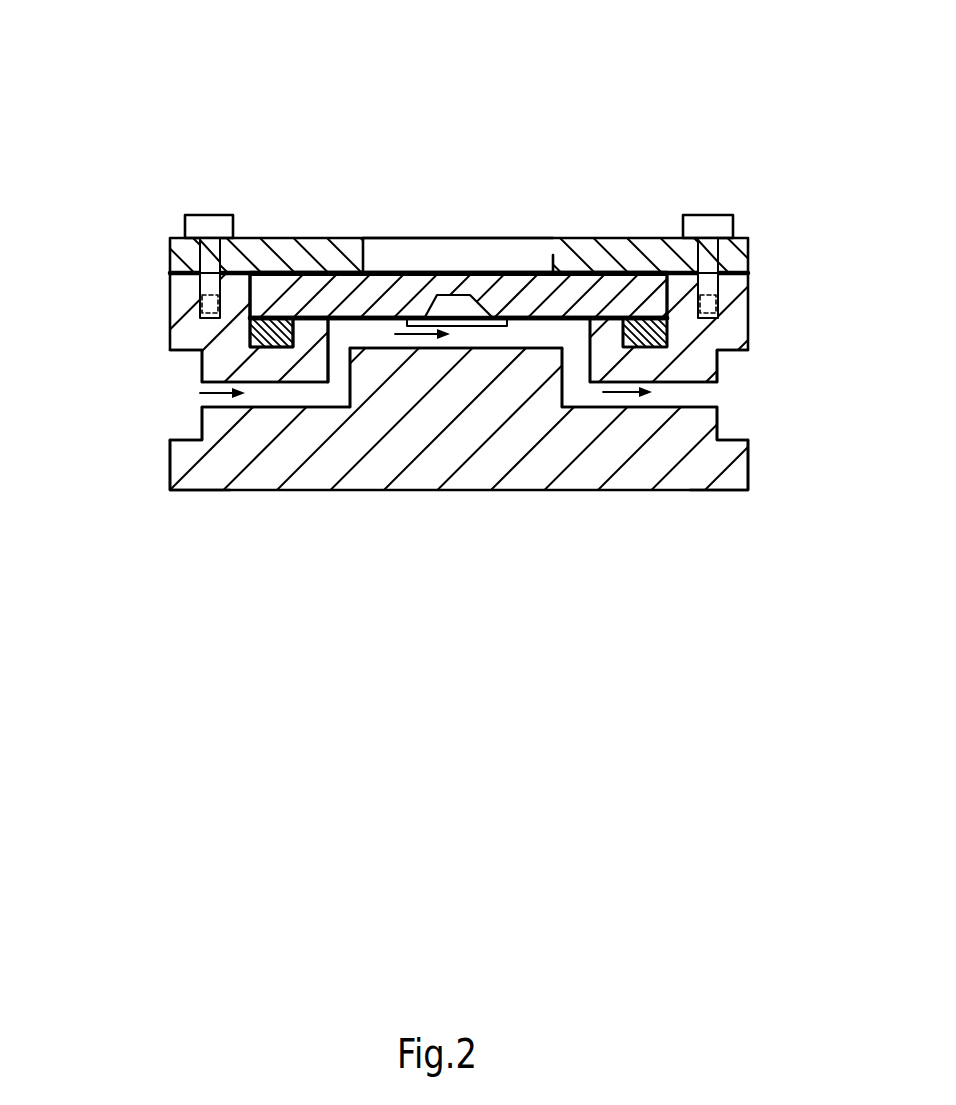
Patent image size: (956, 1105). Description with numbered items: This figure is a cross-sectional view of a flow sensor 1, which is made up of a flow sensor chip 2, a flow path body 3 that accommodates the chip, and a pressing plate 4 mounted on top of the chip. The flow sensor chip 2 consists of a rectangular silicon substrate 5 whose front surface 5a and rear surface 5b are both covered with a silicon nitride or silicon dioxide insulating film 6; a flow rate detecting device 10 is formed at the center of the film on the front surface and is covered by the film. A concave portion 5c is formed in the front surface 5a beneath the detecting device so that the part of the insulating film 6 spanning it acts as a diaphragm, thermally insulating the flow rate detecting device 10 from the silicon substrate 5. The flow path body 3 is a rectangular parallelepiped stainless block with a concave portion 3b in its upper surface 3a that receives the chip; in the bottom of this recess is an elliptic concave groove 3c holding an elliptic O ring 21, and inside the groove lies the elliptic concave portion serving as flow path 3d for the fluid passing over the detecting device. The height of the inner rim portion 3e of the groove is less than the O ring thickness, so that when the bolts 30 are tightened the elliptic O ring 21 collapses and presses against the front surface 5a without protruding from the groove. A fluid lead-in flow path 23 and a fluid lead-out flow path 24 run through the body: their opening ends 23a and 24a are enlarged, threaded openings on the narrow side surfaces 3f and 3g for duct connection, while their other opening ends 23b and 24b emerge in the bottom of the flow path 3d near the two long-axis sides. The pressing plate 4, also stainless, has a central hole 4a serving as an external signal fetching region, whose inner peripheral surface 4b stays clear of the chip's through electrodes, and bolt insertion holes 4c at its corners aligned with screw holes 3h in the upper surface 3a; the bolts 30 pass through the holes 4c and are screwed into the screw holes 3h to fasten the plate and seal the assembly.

The flow sensor 1 is at (505, 83).
The flow sensor chip 2 is at (360, 298).
The flow path body 3 is at (168, 294).
The upper surface 3a is at (257, 292).
The concave portion 3b is at (273, 283).
The concave groove 3c is at (268, 349).
The flow path 3d is at (515, 351).
The inner rim portion 3e is at (310, 336).
The side surface 3f is at (172, 470).
The side surface 3g is at (748, 470).
The screw holes 3h is at (203, 314).
The pressing plate 4 is at (168, 258).
The hole 4a is at (392, 258).
The inner peripheral surface 4b is at (553, 262).
The bolt insertion holes 4c is at (205, 263).
The silicon substrate 5 is at (318, 276).
The front surface 5a is at (395, 326).
The rear surface 5b is at (420, 270).
The concave portion 5c is at (474, 300).
The insulating film 6 is at (520, 272).
The flow rate detecting device 10 is at (463, 326).
The elliptic O ring 21 is at (262, 337).
The fluid lead-in flow path 23 is at (281, 394).
The opening end 23a is at (187, 406).
The opening end 23b is at (342, 366).
The fluid lead-out flow path 24 is at (667, 396).
The opening end 24a is at (735, 402).
The opening end 24b is at (577, 368).
The bolts 30 is at (200, 215).